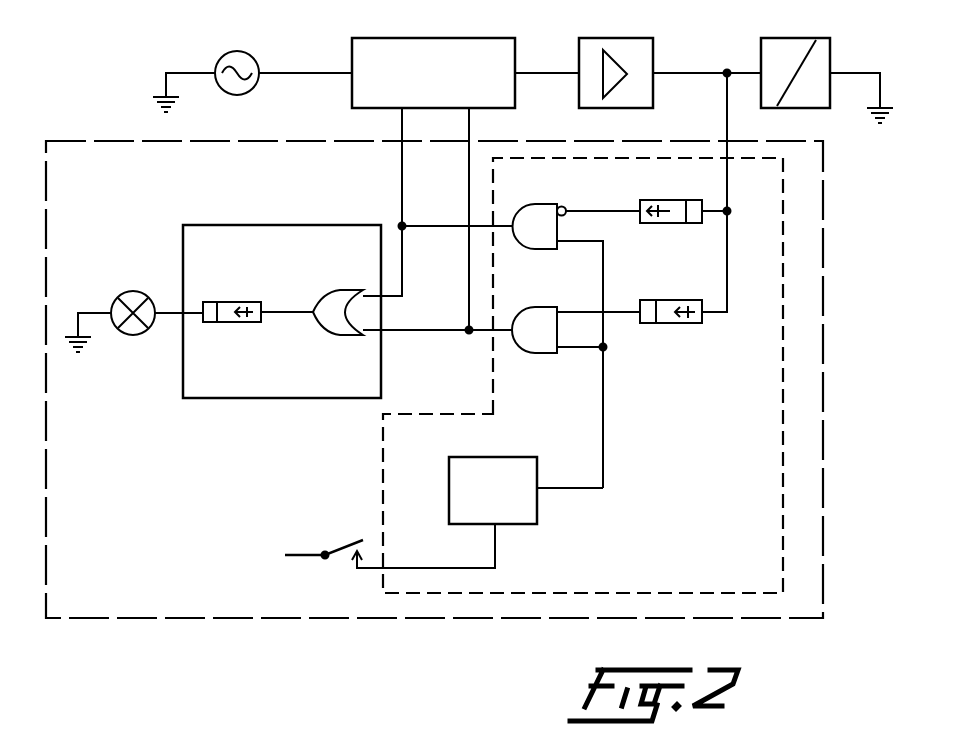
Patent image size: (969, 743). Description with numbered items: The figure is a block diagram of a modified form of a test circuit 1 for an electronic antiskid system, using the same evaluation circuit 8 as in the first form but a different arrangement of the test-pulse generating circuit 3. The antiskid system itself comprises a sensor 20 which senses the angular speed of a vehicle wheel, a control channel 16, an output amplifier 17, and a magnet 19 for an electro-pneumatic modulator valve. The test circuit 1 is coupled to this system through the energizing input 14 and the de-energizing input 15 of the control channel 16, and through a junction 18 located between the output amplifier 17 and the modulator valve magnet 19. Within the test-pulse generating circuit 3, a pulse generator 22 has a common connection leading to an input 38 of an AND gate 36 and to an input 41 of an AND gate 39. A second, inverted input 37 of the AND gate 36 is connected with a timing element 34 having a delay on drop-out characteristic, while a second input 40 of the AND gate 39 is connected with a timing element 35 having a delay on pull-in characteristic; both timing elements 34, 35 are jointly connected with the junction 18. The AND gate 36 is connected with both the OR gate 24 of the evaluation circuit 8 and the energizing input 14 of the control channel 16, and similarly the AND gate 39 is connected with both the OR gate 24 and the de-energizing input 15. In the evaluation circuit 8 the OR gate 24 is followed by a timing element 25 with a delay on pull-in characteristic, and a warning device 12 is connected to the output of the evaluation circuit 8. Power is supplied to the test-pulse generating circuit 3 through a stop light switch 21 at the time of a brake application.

The test circuit 1 is at (292, 618).
The test-pulse generating circuit 3 is at (632, 593).
The evaluation circuit 8 is at (272, 225).
The warning device 12 is at (131, 292).
The energizing input 14 is at (402, 118).
The de-energizing input 15 is at (470, 115).
The control channel 16 is at (397, 38).
The output amplifier 17 is at (607, 38).
The junction 18 is at (707, 177).
The magnet 19 is at (791, 38).
The sensor 20 is at (248, 58).
The stop light switch 21 is at (337, 557).
The pulse generator 22 is at (505, 457).
The OR gate 24 is at (329, 292).
The timing element 25 is at (241, 302).
The timing element 34 is at (679, 200).
The timing element 35 is at (681, 300).
The AND gate 36 is at (534, 249).
The inverted input 37 is at (562, 206).
The input 38 is at (560, 248).
The AND gate 39 is at (535, 353).
The second input 40 is at (560, 312).
The input 41 is at (560, 353).